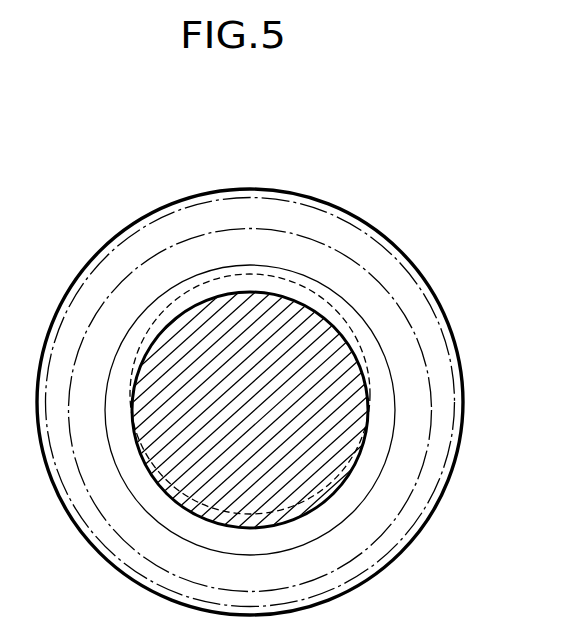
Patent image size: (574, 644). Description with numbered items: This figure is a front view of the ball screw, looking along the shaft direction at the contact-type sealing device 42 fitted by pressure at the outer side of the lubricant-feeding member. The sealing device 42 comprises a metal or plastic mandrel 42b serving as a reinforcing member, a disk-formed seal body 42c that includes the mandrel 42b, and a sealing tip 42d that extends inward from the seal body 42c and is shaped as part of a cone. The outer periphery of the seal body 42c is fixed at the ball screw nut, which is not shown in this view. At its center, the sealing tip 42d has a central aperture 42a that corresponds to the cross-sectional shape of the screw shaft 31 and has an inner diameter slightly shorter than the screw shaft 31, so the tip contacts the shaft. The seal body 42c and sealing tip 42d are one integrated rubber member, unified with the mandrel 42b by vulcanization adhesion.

The contact-type sealing device 42 is at (341, 204).
The central aperture 42a is at (316, 508).
The mandrel 42b is at (395, 268).
The seal body 42c is at (402, 339).
The sealing tip 42d is at (389, 403).
The screw shaft 31 is at (173, 360).